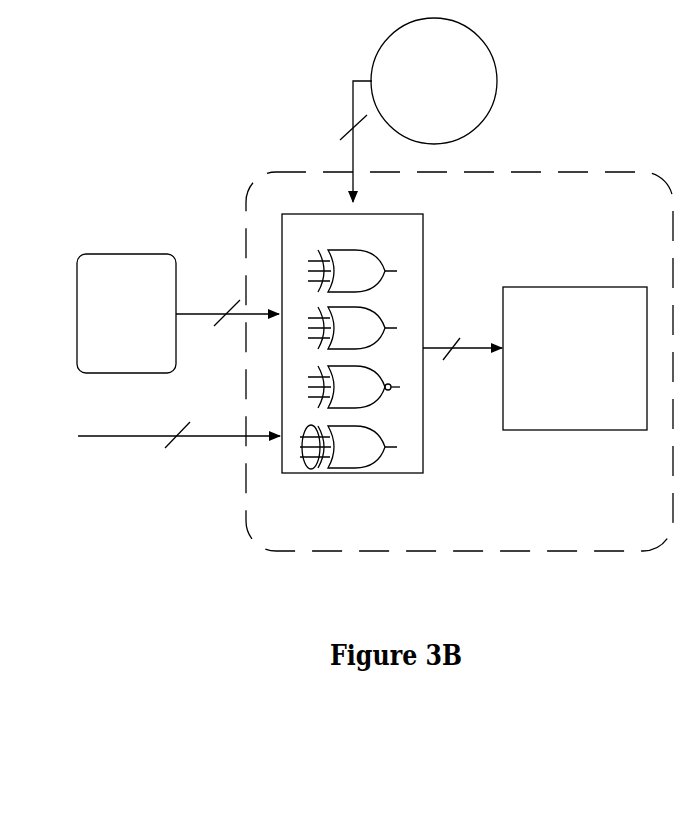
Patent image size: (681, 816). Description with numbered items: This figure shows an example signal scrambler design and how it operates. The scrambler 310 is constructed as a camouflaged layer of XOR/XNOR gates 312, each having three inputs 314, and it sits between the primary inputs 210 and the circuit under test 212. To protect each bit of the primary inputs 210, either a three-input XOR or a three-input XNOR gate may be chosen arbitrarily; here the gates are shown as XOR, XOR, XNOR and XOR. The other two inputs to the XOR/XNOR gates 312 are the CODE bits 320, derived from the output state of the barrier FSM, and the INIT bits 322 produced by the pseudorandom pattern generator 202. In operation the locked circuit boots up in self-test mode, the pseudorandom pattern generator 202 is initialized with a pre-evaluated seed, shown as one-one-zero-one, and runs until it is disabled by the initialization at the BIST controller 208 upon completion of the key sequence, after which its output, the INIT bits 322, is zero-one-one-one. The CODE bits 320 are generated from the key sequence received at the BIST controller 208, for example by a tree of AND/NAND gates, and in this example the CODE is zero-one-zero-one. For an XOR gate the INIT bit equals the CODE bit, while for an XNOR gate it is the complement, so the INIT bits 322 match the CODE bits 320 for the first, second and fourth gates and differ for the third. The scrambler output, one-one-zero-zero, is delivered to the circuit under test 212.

The BIST controller 208 is at (480, 38).
The CODE bits 320 is at (272, 64).
The INIT bits 322 is at (203, 222).
The pseudorandom pattern generator 202 is at (125, 252).
The scrambler 310 is at (458, 340).
The XOR/XNOR gates 312 is at (366, 466).
The three inputs 314 is at (308, 468).
The circuit under test 212 is at (580, 432).
The primary inputs 210 is at (75, 450).